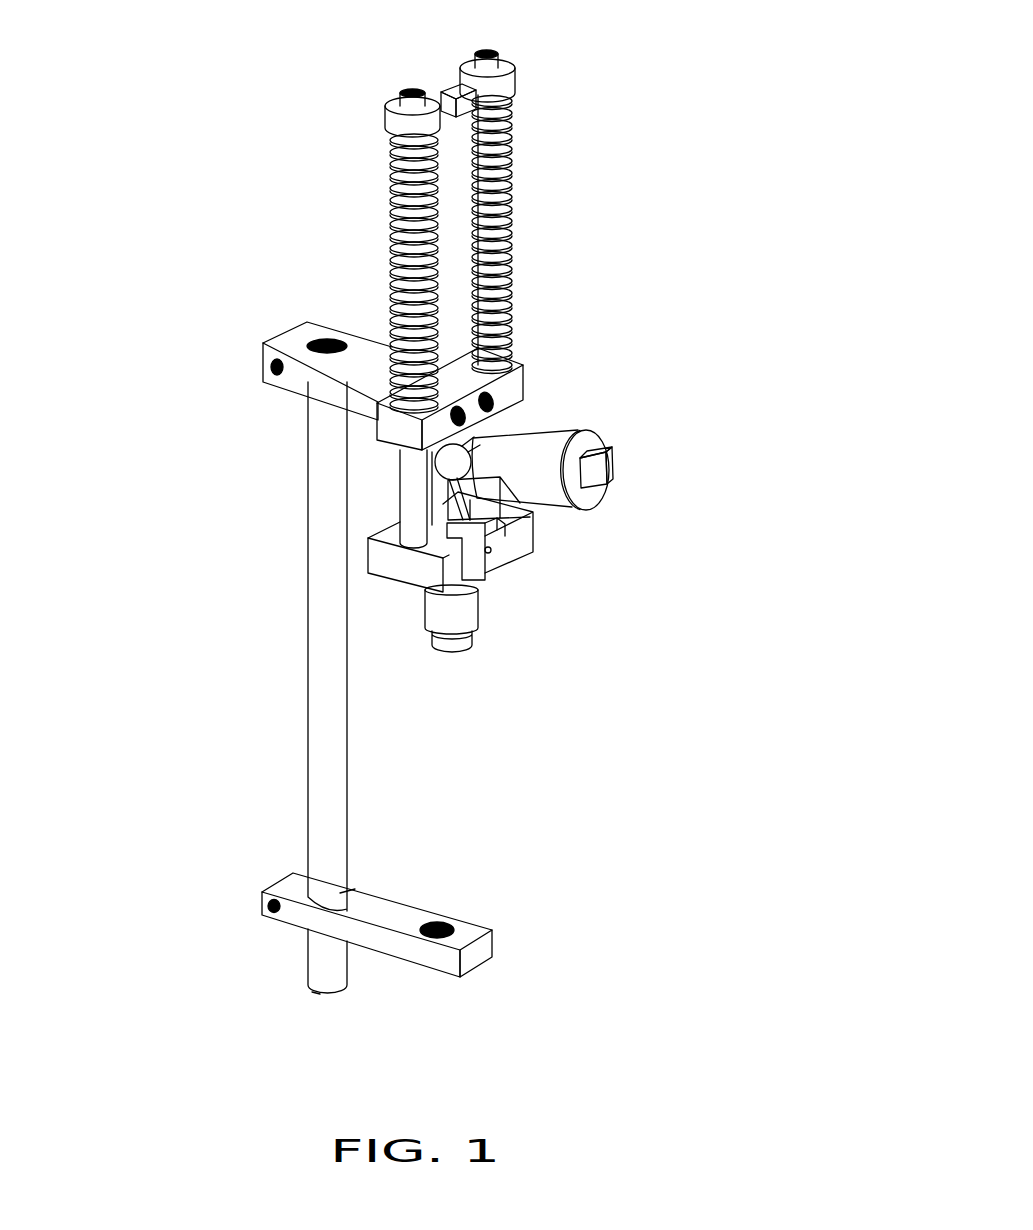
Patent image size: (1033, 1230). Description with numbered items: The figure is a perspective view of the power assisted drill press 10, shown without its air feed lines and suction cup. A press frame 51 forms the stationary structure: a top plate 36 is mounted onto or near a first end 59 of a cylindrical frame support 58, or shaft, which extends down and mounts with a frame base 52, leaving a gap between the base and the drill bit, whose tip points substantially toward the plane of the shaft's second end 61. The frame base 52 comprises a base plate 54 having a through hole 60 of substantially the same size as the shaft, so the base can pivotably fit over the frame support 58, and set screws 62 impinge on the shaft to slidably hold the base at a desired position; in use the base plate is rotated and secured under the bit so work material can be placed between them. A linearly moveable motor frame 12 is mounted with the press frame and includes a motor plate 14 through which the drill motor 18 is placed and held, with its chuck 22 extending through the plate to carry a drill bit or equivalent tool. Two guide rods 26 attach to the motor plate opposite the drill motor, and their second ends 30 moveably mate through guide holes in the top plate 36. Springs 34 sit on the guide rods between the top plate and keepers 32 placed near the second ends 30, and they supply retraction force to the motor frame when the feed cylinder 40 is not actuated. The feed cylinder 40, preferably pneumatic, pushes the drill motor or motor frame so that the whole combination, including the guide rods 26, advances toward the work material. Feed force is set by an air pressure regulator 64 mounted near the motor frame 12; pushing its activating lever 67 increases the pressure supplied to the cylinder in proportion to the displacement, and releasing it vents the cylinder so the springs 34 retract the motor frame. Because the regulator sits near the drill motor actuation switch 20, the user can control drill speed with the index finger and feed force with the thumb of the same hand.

The press 10 is at (233, 203).
The motor frame 12 is at (588, 542).
The motor plate 14 is at (533, 550).
The drill motor 18 is at (513, 438).
The drill motor actuation switch 20 is at (500, 522).
The chuck 22 is at (480, 630).
The guide rods 26 is at (578, 40).
The second end 30 is at (498, 55).
The keepers 32 is at (518, 80).
The springs 34 is at (512, 242).
The top plate 36 is at (525, 391).
The feed cylinder 40 is at (442, 92).
The press frame 51 is at (212, 687).
The frame support 58 is at (322, 737).
The frame base 52 is at (495, 925).
The base plate 54 is at (493, 945).
The first end 59 is at (327, 339).
The through hole 60 is at (353, 892).
The second end 61 is at (312, 997).
The set screws 62 is at (267, 908).
The air pressure regulator 64 is at (483, 568).
The activating lever 67 is at (497, 533).